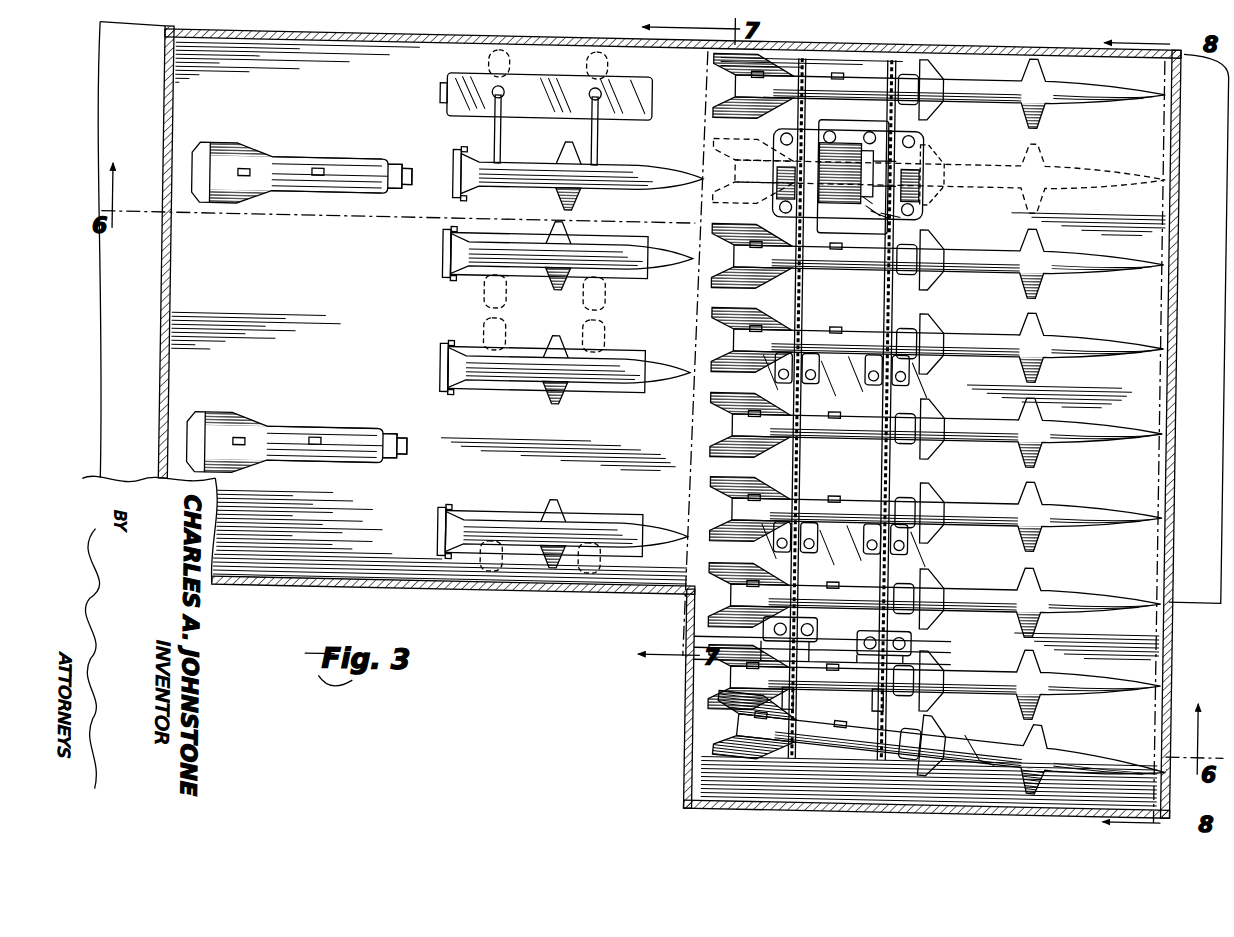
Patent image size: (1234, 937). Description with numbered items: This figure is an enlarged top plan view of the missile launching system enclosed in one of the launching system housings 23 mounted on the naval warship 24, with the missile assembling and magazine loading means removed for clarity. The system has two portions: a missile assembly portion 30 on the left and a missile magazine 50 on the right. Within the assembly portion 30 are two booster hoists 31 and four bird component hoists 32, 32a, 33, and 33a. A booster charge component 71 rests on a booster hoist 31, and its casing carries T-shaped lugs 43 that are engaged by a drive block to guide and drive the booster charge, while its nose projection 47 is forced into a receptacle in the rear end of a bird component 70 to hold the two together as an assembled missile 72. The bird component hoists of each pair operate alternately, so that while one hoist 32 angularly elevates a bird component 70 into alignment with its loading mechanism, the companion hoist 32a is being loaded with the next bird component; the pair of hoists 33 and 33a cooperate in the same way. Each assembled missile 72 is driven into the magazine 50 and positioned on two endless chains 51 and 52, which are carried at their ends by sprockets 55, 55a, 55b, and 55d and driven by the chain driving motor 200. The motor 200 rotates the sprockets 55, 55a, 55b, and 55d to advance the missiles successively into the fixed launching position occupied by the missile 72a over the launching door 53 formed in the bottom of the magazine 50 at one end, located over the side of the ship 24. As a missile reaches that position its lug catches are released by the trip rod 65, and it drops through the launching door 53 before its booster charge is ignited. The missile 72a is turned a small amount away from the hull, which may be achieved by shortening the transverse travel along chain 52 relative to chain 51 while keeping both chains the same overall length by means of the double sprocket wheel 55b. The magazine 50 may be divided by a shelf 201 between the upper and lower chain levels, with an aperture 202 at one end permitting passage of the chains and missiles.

The missile launching system housing 23 is at (525, 583).
The naval warship 24 is at (123, 386).
The missile assembly portion 30 is at (250, 288).
The booster hoist 31 is at (312, 308).
The bird component hoist 32 is at (592, 131).
The bird component hoist 32a is at (525, 277).
The bird component hoist 33 is at (523, 388).
The bird component hoist 33a is at (530, 506).
The T-shaped lugs 43 is at (249, 163).
The nose projection 47 is at (411, 168).
The missile magazine 50 is at (934, 430).
The endless chain 51 is at (889, 280).
The endless chain 52 is at (812, 377).
The launching door 53 is at (1133, 730).
The sprocket 55 is at (895, 685).
The sprocket 55a is at (908, 189).
The double sprocket wheel 55b is at (803, 687).
The sprocket 55d is at (793, 185).
The rod 65 is at (703, 628).
The bird component 70 is at (628, 185).
The booster charge component 71 is at (355, 182).
The assembled missile 72 is at (948, 96).
The missile in launching position 72a is at (977, 741).
The chain driving motor 200 is at (852, 121).
The shelf 201 is at (1121, 312).
The aperture 202 is at (1132, 95).